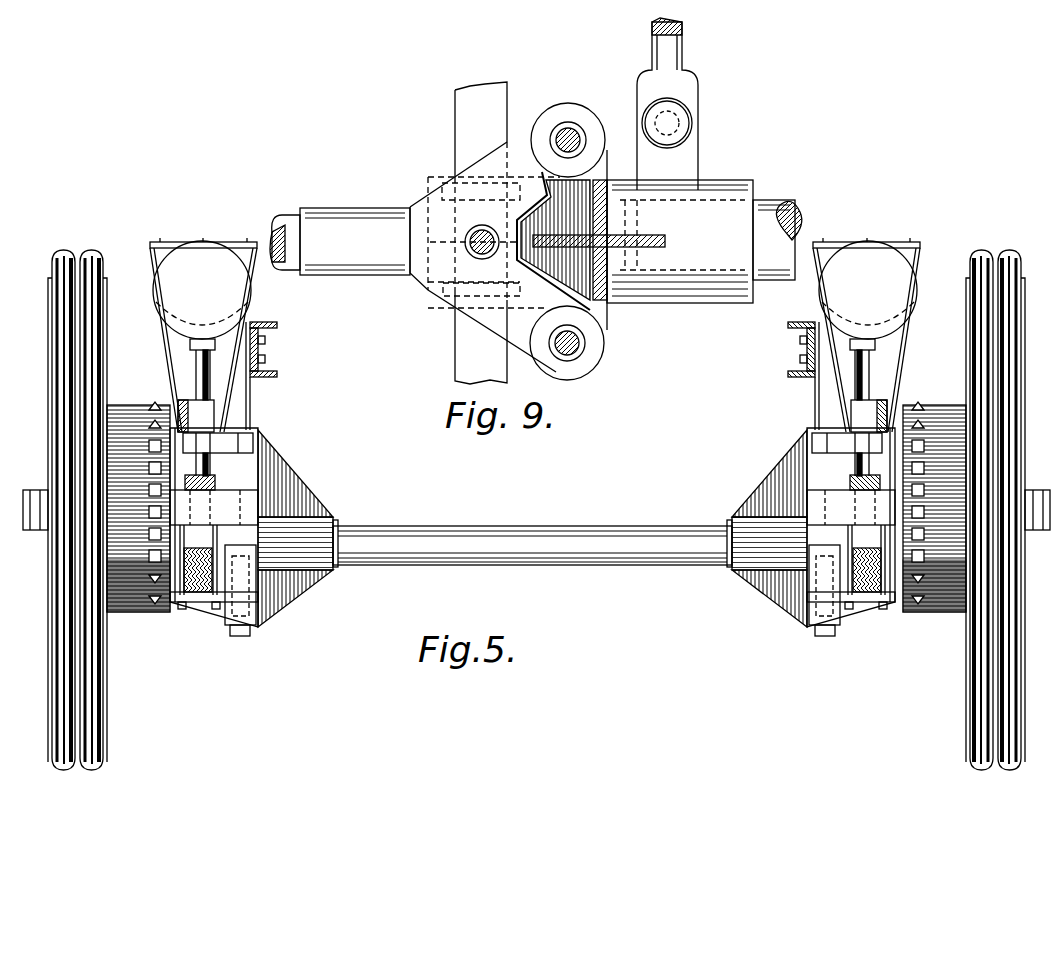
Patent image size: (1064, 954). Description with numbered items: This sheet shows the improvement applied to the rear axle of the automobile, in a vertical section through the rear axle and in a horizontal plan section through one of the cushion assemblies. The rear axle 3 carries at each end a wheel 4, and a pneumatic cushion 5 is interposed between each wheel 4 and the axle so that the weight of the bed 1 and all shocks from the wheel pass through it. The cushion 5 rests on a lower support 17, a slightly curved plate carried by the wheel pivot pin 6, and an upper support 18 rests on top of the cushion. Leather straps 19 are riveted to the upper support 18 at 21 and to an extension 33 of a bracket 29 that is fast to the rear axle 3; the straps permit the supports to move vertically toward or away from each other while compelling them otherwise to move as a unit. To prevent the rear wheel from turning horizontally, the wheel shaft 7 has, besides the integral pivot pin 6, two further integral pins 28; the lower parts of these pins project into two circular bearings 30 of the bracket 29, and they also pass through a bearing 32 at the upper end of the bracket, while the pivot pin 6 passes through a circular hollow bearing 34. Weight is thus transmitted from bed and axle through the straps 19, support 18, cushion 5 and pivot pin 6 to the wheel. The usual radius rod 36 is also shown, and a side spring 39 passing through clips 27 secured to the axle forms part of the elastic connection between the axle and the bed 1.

In FIG. 5, the body of the bed of the car 1 is at (278, 378).
In FIG. 5, the rear axle 3 is at (561, 565).
In FIG. 9, the rear axle 3 is at (797, 222).
In FIG. 5, the wheels 4 is at (100, 672).
In FIG. 5, the pneumatic cushion 5 is at (222, 300).
In FIG. 5, the wheel pivot pin 6 is at (198, 470).
In FIG. 9, the wheel shaft 7 is at (340, 241).
In FIG. 5, the lower support 17 is at (268, 348).
In FIG. 5, the upper support 18 is at (150, 246).
In FIG. 5, the straps 19 is at (226, 398).
In FIG. 5, the rivets 21 is at (247, 240).
In FIG. 5, the clips 27 is at (186, 568).
In FIG. 5, the pins 28 is at (252, 477).
In FIG. 9, the pins 28 is at (566, 126).
In FIG. 5, the bracket 29 is at (316, 516).
In FIG. 9, the bracket 29 is at (693, 242).
In FIG. 9, the circular bearings 30 is at (580, 130).
In FIG. 5, the bearing 32 is at (255, 443).
In FIG. 9, the extension 33 is at (497, 320).
In FIG. 5, the circular hollow bearing 34 is at (182, 405).
In FIG. 9, the radius rod 36 is at (692, 88).
In FIG. 5, the side spring 39 is at (236, 600).